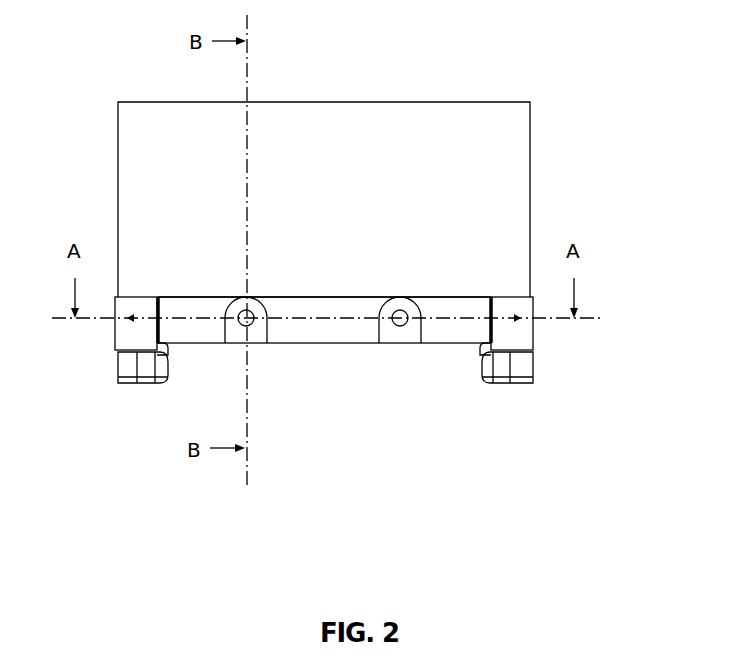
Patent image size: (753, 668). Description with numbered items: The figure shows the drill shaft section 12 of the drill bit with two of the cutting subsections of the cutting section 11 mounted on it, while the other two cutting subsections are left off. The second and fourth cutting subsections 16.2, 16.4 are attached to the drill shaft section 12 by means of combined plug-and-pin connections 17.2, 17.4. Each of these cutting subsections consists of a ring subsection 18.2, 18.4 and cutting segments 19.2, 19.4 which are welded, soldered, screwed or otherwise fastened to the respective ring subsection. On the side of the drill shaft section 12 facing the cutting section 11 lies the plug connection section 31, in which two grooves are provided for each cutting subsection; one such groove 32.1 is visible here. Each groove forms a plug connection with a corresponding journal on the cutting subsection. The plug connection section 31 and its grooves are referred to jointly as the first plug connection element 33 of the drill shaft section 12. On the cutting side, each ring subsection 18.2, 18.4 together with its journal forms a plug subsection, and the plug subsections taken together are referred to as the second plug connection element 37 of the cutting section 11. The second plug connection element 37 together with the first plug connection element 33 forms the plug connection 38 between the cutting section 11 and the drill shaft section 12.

The cutting section 11 is at (622, 338).
The drill shaft section 12 is at (505, 170).
The second cutting subsection 16.2 is at (102, 335).
The fourth cutting subsection 16.4 is at (548, 338).
The combined plug-and-pin connection 17.2 is at (171, 346).
The combined plug-and-pin connection 17.4 is at (479, 348).
The ring subsection 18.2 is at (136, 314).
The ring subsection 18.4 is at (512, 314).
The cutting segments 19.2 is at (137, 383).
The cutting segments 19.4 is at (512, 383).
The plug connection section 31 is at (353, 325).
The groove 32.1 is at (249, 297).
The first plug connection element 33 is at (333, 289).
The second plug connection element 37 is at (163, 293).
The plug connection 38 is at (293, 386).